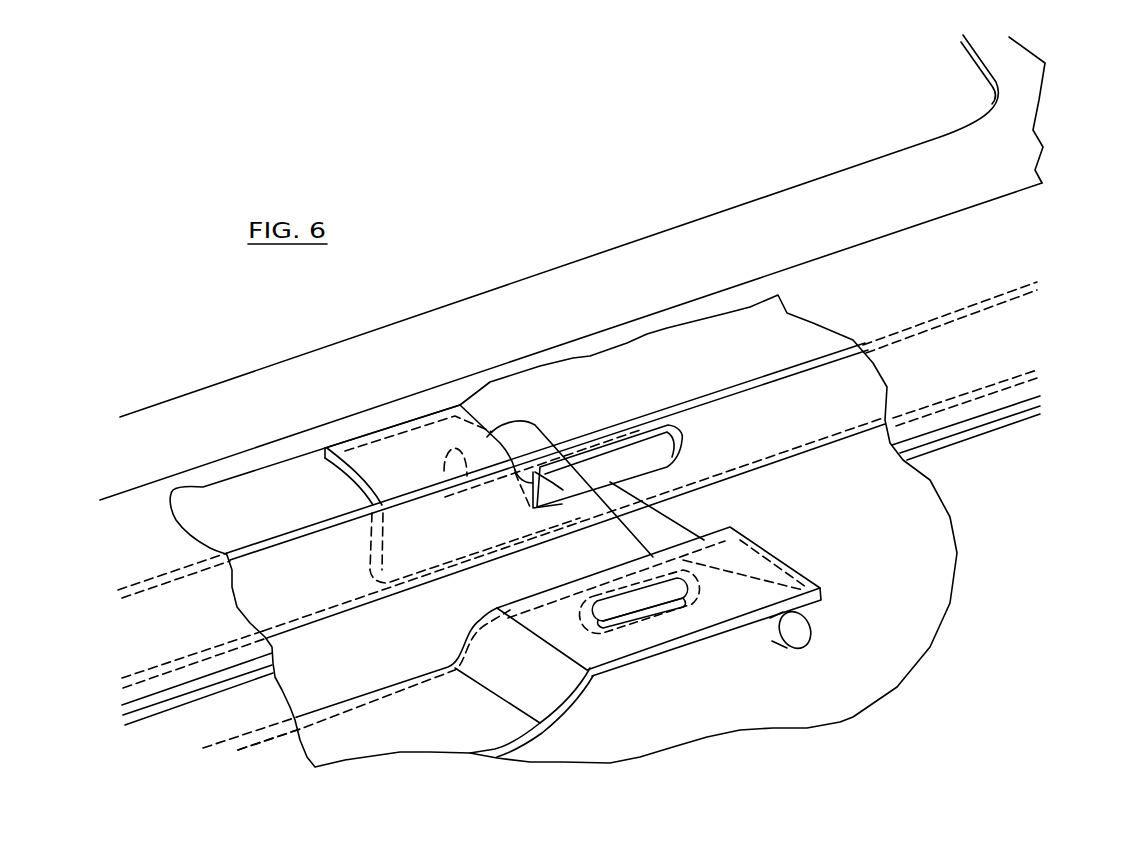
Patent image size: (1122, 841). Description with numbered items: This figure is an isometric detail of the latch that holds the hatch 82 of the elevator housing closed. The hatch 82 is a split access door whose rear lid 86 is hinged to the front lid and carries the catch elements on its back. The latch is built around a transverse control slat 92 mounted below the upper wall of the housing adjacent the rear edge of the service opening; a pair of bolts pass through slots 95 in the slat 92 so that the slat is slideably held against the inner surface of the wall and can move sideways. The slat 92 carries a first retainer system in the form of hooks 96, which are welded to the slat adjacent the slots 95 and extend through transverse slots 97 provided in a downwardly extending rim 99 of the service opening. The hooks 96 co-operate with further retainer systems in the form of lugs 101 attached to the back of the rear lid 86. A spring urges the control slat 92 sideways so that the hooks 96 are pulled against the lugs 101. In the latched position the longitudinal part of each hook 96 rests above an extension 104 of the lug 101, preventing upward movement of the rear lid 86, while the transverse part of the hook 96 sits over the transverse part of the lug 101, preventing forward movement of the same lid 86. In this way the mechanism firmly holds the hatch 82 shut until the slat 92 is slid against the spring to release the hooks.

The hatch 82 is at (523, 246).
The rear lid 86 is at (654, 297).
The control slat 92 is at (557, 718).
The slots 95 is at (657, 617).
The hooks 96 is at (522, 431).
The transverse slots 97 is at (647, 444).
The rim 99 is at (824, 417).
The lugs 101 is at (348, 470).
The extension 104 is at (530, 520).